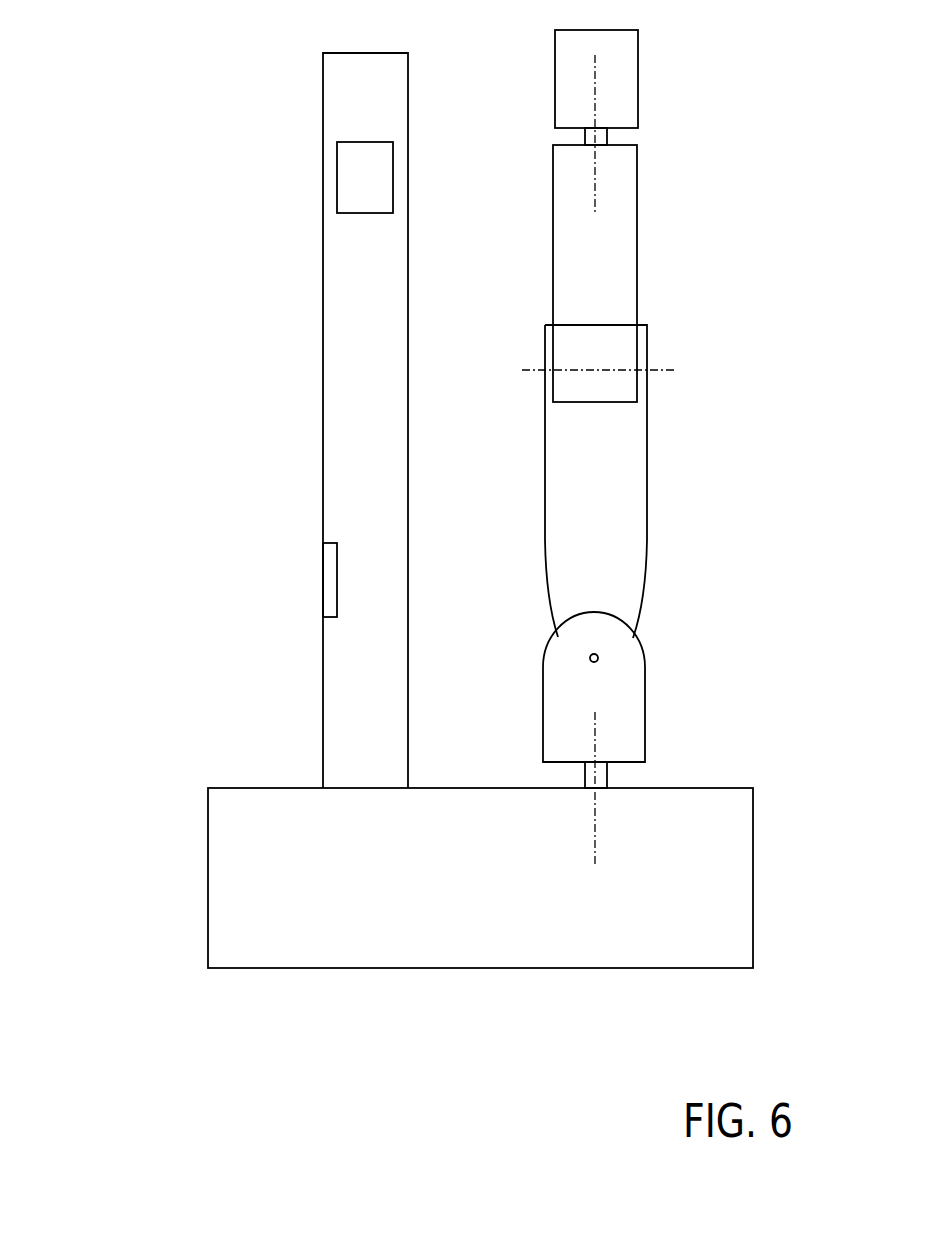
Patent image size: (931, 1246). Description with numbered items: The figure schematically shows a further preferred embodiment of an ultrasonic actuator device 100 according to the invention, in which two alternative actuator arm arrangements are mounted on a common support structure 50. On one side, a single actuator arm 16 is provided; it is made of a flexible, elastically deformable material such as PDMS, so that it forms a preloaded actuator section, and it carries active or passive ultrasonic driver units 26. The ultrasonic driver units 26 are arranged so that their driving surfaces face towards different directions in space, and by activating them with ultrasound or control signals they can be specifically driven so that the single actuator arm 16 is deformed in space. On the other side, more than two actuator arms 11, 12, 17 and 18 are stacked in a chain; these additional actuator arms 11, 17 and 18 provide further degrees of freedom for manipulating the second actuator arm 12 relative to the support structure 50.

The machine tool / processing system 100 is at (184, 92).
The support structure 50 is at (726, 952).
The single actuator arm 16 is at (337, 701).
The ultrasonic driver units 26 is at (350, 184).
The second actuator arm 12 is at (618, 88).
The actuator arm 18 is at (620, 238).
The actuator arm 17 is at (620, 479).
The actuator arm 11 is at (615, 713).